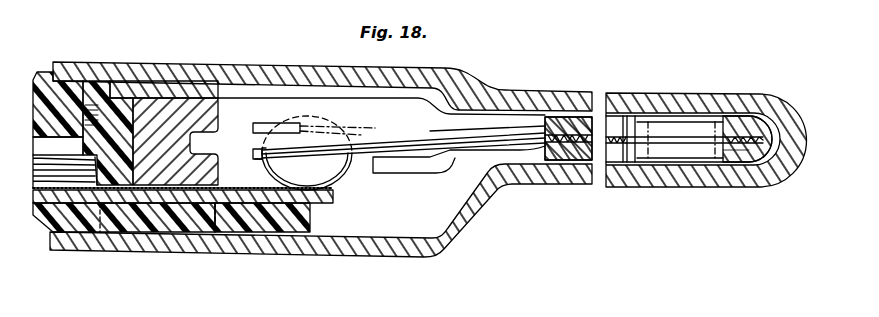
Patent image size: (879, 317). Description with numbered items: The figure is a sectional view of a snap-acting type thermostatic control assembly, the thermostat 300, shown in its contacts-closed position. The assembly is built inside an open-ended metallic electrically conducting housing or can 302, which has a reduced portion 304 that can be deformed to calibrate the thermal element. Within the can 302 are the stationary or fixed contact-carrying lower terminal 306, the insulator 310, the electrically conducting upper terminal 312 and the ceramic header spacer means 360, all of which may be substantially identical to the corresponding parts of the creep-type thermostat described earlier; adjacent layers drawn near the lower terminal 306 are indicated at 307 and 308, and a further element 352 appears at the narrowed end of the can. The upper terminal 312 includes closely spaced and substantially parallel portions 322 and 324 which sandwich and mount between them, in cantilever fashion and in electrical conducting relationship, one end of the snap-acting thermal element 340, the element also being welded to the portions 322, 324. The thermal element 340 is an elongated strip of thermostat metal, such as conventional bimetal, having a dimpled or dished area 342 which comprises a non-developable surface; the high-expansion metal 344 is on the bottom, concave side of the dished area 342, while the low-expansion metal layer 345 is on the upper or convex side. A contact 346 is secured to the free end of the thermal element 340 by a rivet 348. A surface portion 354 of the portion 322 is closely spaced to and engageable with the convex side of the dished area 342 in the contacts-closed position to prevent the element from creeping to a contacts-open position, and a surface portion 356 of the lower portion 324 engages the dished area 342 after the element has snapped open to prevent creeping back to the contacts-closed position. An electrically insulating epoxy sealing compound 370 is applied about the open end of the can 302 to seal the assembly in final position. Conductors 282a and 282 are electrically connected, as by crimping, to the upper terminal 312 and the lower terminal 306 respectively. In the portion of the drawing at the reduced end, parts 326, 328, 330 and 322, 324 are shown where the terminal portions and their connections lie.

The thermostat 300 is at (242, 48).
The housing or can 302 is at (444, 63).
The reduced portion 304 is at (703, 93).
The lower terminal 306 is at (346, 206).
The dotted seal line 307 is at (335, 189).
The lower block 308 is at (322, 207).
The insulator 310 is at (245, 230).
The upper terminal 312 is at (257, 82).
The portion of upper terminal 322 is at (737, 127).
The lower portion of upper terminal 324 is at (735, 153).
The threaded rod end 326 is at (643, 117).
The proximal block 328 is at (637, 137).
The inner tube 330 is at (720, 159).
The snap-acting thermal element 340 is at (243, 155).
The dished area 342 is at (414, 140).
The high-expansion metal 344 is at (260, 158).
The low-expansion metal layer 345 is at (258, 150).
The contact 346 is at (266, 173).
The rivet 348 is at (310, 140).
The plug 352 is at (563, 103).
The surface portion 354 is at (452, 131).
The surface portion 356 is at (457, 158).
The ceramic header spacer means 360 is at (172, 108).
The epoxy sealing compound 370 is at (40, 72).
The conductor 282 is at (92, 186).
The conductor 282a is at (100, 80).